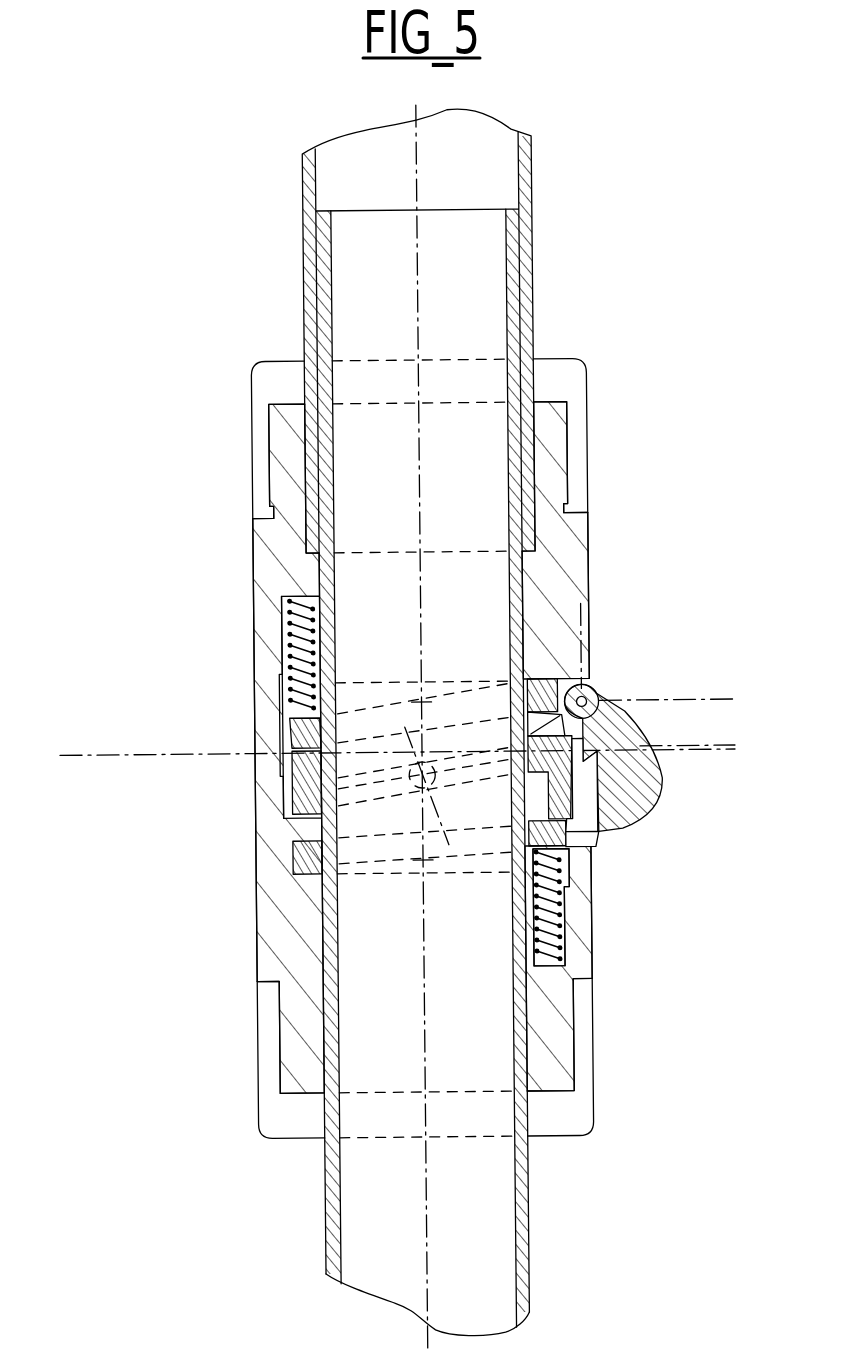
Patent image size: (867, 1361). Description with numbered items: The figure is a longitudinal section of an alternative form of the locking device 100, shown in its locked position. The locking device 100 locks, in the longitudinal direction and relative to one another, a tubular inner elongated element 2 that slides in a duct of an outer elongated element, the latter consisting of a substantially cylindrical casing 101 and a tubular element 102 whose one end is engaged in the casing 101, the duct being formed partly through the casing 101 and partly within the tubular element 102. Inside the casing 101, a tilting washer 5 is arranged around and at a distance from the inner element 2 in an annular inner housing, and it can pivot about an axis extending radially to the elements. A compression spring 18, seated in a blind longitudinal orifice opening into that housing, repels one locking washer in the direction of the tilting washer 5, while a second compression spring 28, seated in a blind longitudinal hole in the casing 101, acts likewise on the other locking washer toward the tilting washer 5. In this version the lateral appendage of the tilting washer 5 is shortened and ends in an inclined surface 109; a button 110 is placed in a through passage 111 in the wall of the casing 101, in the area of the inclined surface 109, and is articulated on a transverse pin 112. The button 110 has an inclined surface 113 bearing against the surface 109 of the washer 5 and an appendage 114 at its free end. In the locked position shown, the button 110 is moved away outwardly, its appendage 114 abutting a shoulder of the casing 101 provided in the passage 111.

The tubular inner elongated element 2 is at (327, 1197).
The tilting washer 5 is at (303, 797).
The compression spring 18 is at (553, 998).
The compression spring 28 is at (283, 643).
The locking device 100 is at (648, 380).
The casing 101 is at (570, 545).
The tubular element 102 is at (537, 262).
The inclined surface 109 is at (620, 717).
The button 110 is at (657, 798).
The through passage 111 is at (593, 837).
The transverse pin 112 is at (593, 690).
The inclined surface 113 is at (657, 770).
The appendage 114 is at (597, 850).